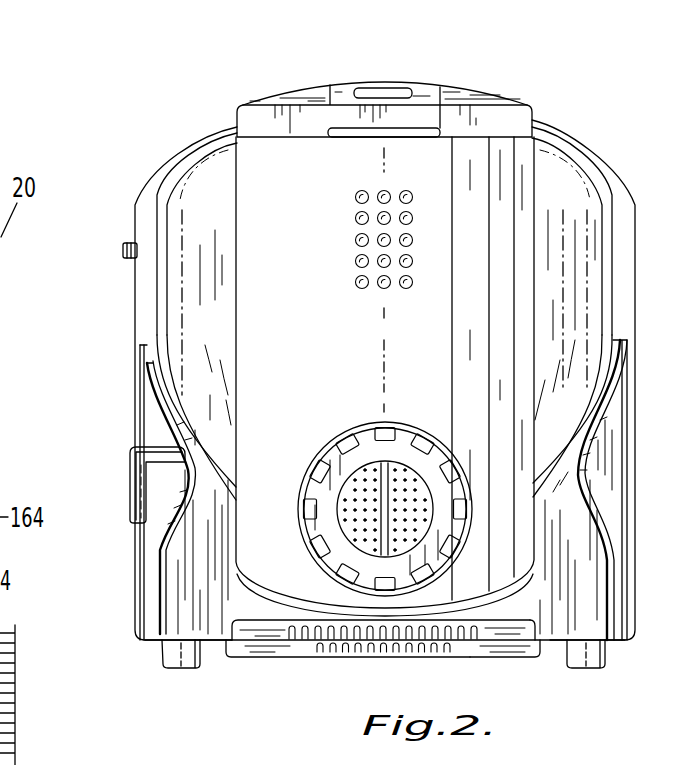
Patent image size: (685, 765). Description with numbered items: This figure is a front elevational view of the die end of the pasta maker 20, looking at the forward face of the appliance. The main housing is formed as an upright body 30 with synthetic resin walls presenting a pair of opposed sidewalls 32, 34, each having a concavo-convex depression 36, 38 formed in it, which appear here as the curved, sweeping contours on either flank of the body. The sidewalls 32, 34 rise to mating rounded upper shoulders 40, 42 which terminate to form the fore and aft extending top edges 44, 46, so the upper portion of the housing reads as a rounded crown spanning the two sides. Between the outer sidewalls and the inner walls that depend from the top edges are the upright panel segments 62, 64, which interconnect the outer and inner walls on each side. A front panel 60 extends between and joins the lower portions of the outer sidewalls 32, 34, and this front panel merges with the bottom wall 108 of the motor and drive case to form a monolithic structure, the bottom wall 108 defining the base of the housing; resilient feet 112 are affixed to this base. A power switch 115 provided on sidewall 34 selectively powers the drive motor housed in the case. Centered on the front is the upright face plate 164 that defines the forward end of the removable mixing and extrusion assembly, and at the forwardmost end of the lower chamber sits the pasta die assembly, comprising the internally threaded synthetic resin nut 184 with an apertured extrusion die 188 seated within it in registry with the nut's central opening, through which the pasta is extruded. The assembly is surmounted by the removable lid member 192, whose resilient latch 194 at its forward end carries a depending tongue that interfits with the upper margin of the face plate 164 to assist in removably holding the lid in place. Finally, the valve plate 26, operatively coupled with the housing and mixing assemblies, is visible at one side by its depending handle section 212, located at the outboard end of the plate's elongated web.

The pasta maker 20 is at (610, 135).
The valve plate 26 is at (100, 467).
The upright body 30 is at (118, 137).
The sidewall 32 is at (618, 327).
The sidewall 34 is at (148, 332).
The concavo-convex depression 36 is at (592, 445).
The concavo-convex depression 38 is at (163, 405).
The rounded upper shoulder 40 is at (569, 135).
The rounded upper shoulder 42 is at (181, 145).
The top edge 44 is at (534, 118).
The top edge 46 is at (235, 125).
The front panel 60 is at (549, 628).
The upright panel segment 62 is at (574, 285).
The upright panel segment 64 is at (177, 303).
The bottom wall 108 is at (258, 648).
The resilient feet 112 is at (183, 668).
The power switch 115 is at (122, 250).
The face plate 164 is at (356, 340).
The nut 184 is at (367, 448).
The extrusion die 188 is at (389, 463).
The lid member 192 is at (428, 70).
The resilient latch 194 is at (385, 92).
The handle section 212 is at (130, 505).